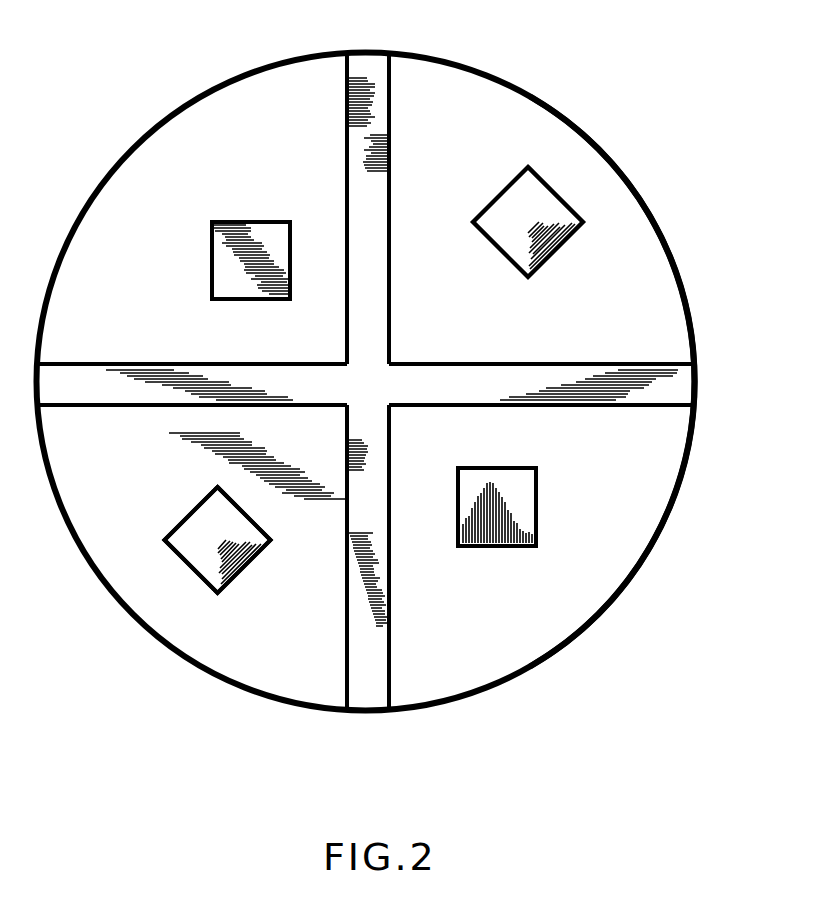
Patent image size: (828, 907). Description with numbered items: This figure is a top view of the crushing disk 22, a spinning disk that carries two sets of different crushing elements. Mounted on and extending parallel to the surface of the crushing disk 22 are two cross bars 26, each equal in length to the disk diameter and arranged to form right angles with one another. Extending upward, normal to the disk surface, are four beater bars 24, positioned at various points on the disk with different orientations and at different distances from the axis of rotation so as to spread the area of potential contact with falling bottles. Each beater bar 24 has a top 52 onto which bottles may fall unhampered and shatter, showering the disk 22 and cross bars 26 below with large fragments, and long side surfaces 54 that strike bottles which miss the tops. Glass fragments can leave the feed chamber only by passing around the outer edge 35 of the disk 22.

The crushing disk 22 is at (512, 683).
The beater bars 24 is at (277, 230).
The cross bars 26 is at (667, 388).
The outer edge 35 is at (665, 525).
The tops 52 is at (238, 243).
The long side surfaces 54 is at (212, 247).